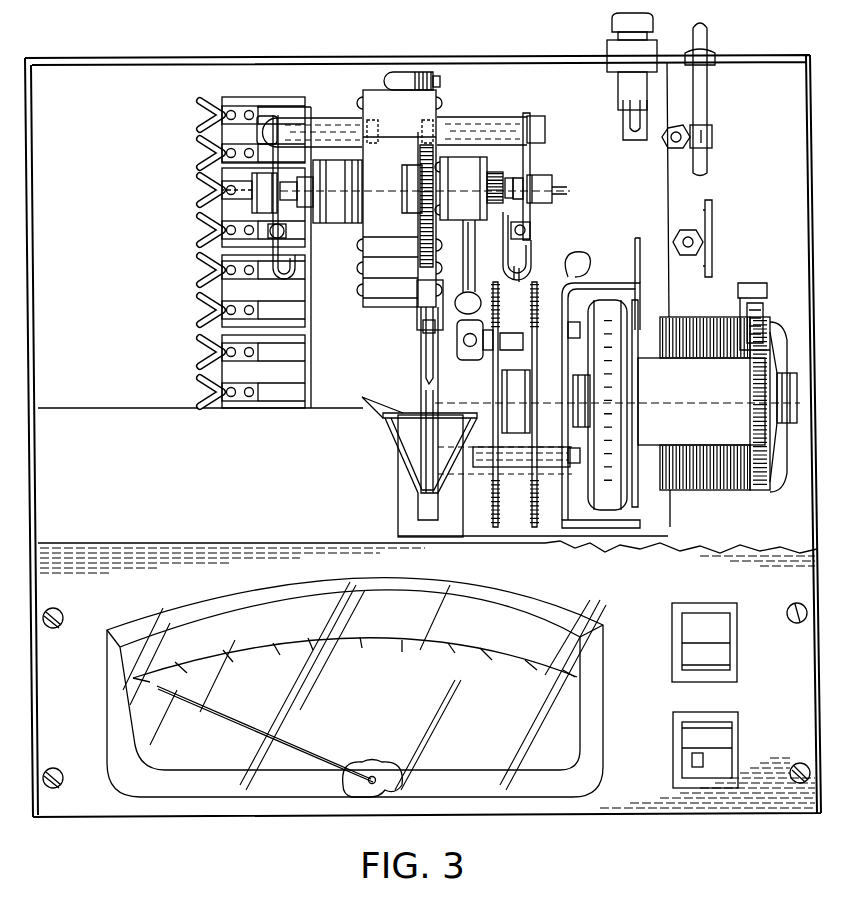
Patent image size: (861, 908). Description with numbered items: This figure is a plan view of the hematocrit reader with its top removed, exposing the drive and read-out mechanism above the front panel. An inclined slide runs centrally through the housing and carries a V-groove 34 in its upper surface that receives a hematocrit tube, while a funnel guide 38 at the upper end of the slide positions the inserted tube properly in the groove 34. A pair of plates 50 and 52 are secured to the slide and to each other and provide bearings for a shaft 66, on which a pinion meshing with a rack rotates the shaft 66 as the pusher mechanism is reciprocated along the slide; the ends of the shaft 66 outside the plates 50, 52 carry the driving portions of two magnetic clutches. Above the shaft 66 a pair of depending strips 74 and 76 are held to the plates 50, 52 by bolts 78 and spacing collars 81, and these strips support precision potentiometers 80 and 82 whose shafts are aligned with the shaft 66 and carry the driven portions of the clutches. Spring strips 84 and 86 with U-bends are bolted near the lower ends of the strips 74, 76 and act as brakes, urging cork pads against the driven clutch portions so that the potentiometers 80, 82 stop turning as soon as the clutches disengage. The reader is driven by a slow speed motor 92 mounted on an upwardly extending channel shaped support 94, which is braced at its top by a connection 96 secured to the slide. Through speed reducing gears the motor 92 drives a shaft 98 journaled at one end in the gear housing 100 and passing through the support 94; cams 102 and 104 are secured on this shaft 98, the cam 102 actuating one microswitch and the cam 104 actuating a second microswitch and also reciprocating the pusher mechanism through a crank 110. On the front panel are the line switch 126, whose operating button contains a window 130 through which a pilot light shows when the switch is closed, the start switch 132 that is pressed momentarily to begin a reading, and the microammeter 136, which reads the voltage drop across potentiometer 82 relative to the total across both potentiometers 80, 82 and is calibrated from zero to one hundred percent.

The V-groove 34 is at (423, 460).
The funnel guide 38 is at (407, 417).
The plate 50 is at (440, 117).
The plate 52 is at (362, 117).
The shaft 66 is at (378, 192).
The depending strip 74 is at (523, 153).
The depending strip 76 is at (220, 213).
The bolt 78 is at (259, 127).
The precision potentiometer 80 is at (548, 180).
The spacing collar 81 is at (328, 123).
The precision potentiometer 82 is at (200, 182).
The spring strip 84 is at (520, 253).
The spring strip 86 is at (290, 283).
The slow speed motor 92 is at (712, 380).
The channel shaped support 94 is at (632, 523).
The connection 96 is at (487, 460).
The shaft 98 is at (548, 405).
The gear housing 100 is at (603, 323).
The cam 102 is at (540, 290).
The cam 104 is at (500, 300).
The crank 110 is at (468, 272).
The line switch 126 is at (727, 788).
The window 130 is at (695, 767).
The start switch 132 is at (737, 652).
The microammeter 136 is at (245, 783).